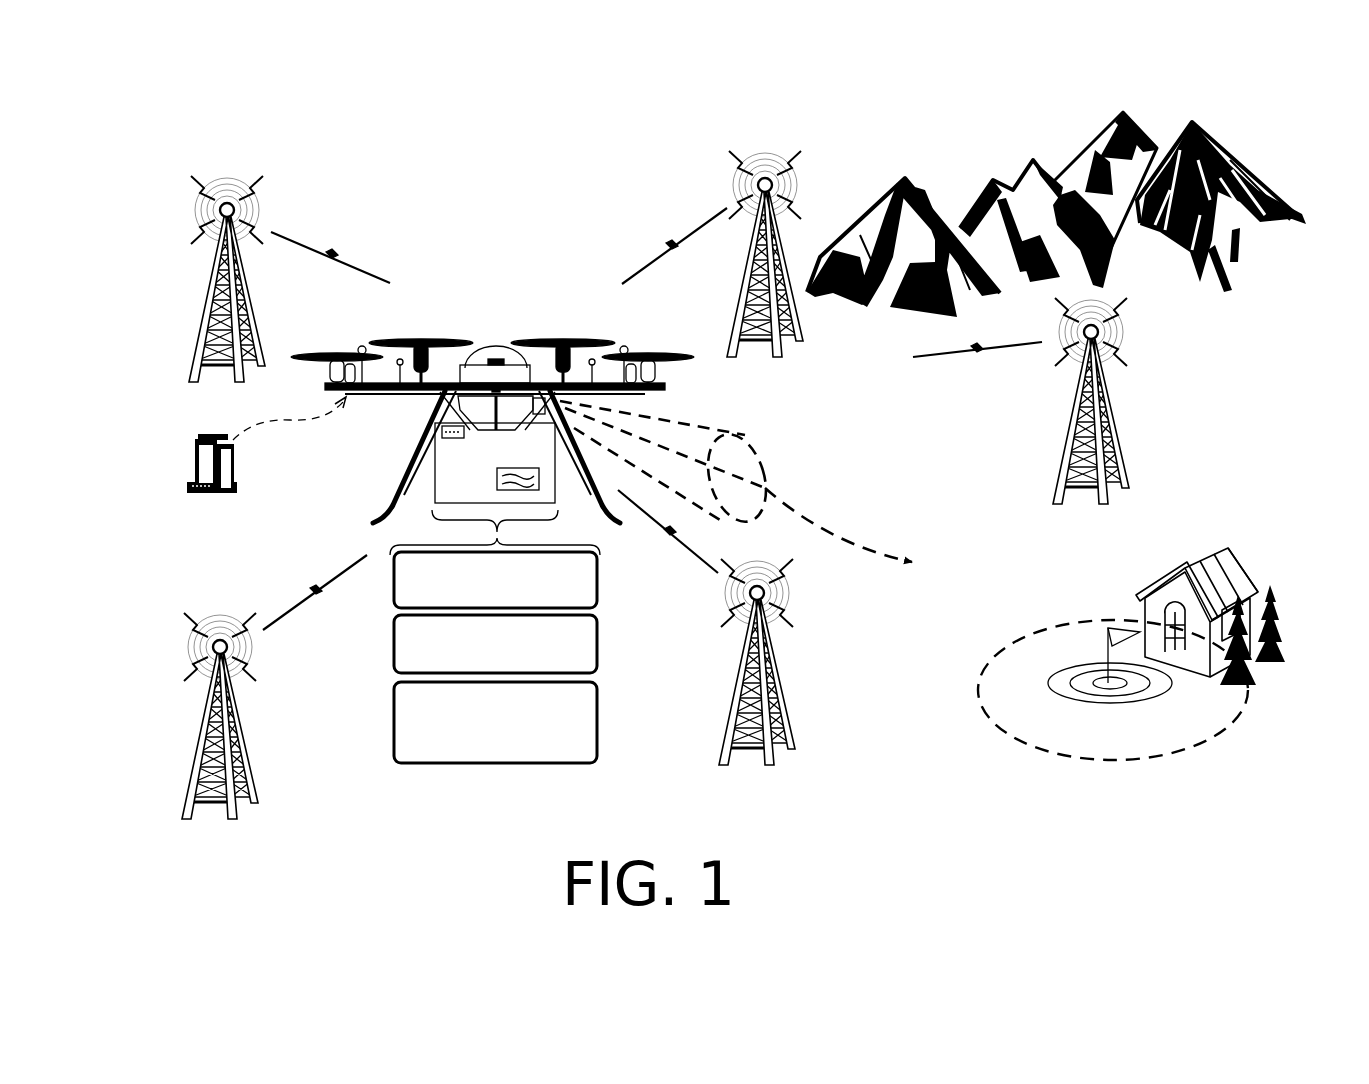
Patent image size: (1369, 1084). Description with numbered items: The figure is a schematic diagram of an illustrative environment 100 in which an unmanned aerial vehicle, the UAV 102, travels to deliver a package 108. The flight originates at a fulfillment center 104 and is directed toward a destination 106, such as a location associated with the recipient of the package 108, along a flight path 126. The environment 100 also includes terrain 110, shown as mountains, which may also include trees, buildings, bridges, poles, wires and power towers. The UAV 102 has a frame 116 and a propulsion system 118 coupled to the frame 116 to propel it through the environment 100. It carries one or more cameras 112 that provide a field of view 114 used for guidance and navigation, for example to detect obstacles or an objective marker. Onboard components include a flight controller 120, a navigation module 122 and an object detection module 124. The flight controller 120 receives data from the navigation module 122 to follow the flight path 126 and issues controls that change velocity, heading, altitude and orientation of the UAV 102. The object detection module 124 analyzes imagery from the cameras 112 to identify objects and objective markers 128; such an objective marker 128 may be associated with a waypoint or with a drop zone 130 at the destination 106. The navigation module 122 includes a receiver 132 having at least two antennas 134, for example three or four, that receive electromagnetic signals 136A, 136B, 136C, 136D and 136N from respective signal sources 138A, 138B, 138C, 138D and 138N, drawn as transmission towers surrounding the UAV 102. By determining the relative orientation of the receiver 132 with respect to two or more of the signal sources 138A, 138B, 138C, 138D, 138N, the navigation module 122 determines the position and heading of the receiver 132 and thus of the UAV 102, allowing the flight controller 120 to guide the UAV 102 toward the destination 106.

The environment 100 is at (487, 178).
The unmanned aerial vehicle 102 is at (596, 388).
The fulfillment center 104 is at (252, 469).
The destination 106 is at (1092, 654).
The package 108 is at (452, 483).
The terrain 110 is at (988, 140).
The camera 112 is at (545, 415).
The field of view 114 is at (750, 437).
The frame 116 is at (440, 410).
The propulsion system 118 is at (560, 362).
The flight controller 120 is at (495, 580).
The navigation module 122 is at (495, 644).
The object detection module 124 is at (495, 722).
The flight path 126 is at (856, 545).
The objective marker 128 is at (1108, 628).
The drop zone 130 is at (1135, 700).
The receiver 132 is at (480, 358).
The antennas 134 is at (400, 358).
The electromagnetic signal 136A is at (331, 254).
The electromagnetic signal 136B is at (313, 591).
The electromagnetic signal 136C is at (671, 249).
The electromagnetic signal 136D is at (671, 534).
The electromagnetic signal 136N is at (975, 353).
The signal source 138A is at (221, 209).
The signal source 138B is at (214, 646).
The signal source 138C is at (758, 183).
The signal source 138D is at (763, 592).
The signal source 138N is at (1084, 328).